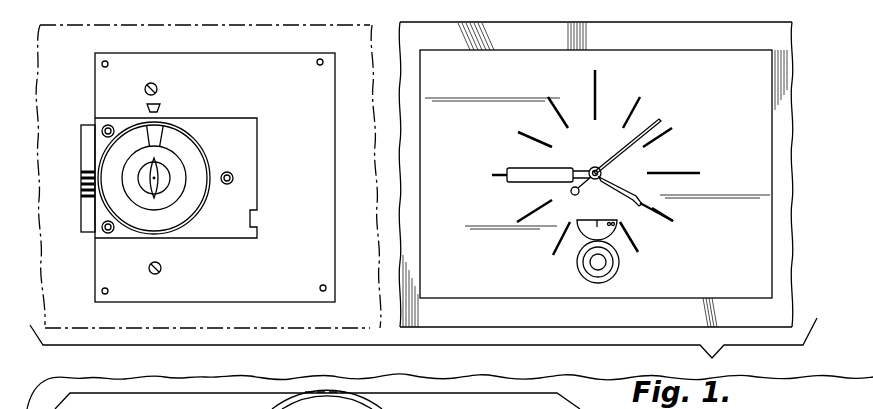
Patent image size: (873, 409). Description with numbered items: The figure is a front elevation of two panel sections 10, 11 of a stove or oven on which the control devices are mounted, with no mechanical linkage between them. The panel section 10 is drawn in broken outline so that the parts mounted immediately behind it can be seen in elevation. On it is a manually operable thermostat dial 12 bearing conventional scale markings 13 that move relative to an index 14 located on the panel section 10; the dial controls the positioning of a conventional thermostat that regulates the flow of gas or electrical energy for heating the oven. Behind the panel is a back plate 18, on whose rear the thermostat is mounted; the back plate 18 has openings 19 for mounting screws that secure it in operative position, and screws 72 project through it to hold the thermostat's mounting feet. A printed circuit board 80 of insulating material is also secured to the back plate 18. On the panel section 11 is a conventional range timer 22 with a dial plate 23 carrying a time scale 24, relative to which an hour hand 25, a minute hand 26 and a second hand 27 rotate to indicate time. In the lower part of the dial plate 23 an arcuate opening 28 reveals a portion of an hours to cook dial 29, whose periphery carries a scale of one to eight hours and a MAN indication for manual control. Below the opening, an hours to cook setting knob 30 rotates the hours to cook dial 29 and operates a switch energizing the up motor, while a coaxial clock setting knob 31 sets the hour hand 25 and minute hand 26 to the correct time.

The panel section 10 is at (170, 32).
The panel section 11 is at (502, 28).
The thermostat dial 12 is at (195, 140).
The scale markings 13 is at (183, 220).
The index 14 is at (163, 108).
The back plate 18 is at (293, 62).
The openings 19 is at (102, 63).
The range timer 22 is at (743, 46).
The dial plate 23 is at (630, 60).
The time scale 24 is at (672, 128).
The hour hand 25 is at (626, 188).
The minute hand 26 is at (530, 170).
The second hand 27 is at (626, 147).
The arcuate opening 28 is at (600, 207).
The hours to cook dial 29 is at (583, 233).
The hours to cook setting knob 30 is at (619, 263).
The clock setting knob 31 is at (596, 264).
The screws 72 is at (145, 92).
The printed circuit board 80 is at (88, 137).